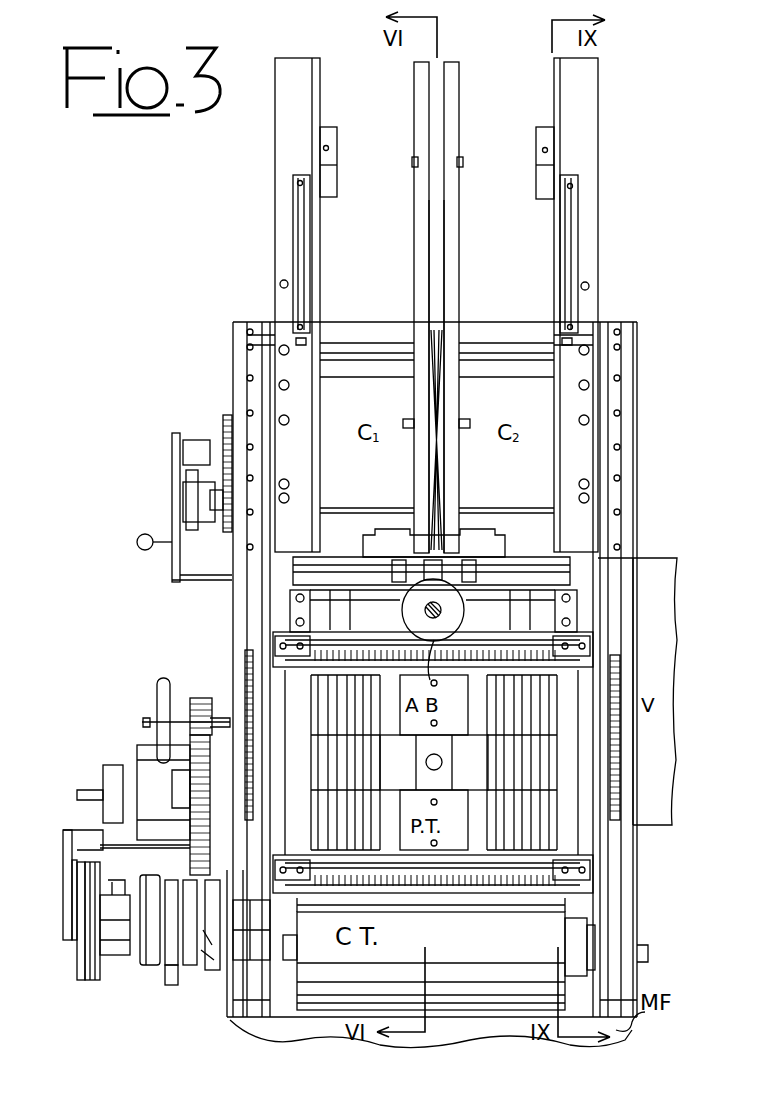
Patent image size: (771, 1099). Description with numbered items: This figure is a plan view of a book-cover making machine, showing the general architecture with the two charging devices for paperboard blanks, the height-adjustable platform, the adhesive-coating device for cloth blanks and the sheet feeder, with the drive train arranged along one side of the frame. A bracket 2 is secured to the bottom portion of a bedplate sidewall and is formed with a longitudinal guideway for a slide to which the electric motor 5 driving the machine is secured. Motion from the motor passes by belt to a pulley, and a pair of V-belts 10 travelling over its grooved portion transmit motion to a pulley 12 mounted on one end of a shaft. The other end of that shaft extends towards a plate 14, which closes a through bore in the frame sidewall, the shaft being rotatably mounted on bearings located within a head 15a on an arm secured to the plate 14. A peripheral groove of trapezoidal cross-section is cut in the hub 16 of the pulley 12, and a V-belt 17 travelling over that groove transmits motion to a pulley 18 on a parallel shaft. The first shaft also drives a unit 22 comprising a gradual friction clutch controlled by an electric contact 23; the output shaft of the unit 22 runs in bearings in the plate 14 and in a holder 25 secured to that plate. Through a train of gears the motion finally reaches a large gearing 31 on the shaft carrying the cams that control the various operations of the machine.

The bracket 2 is at (152, 748).
The electric motor 5 is at (148, 785).
The V-belts 10 is at (93, 978).
The pulley 12 is at (80, 968).
The plate 14 is at (237, 928).
The head 15a is at (115, 932).
The hub 16 is at (73, 932).
The V-belt 17 is at (65, 893).
The pulley 18 is at (62, 813).
The unit 22 is at (158, 987).
The electric contact 23 is at (182, 970).
The holder 25 is at (212, 950).
The large gearing 31 is at (201, 697).